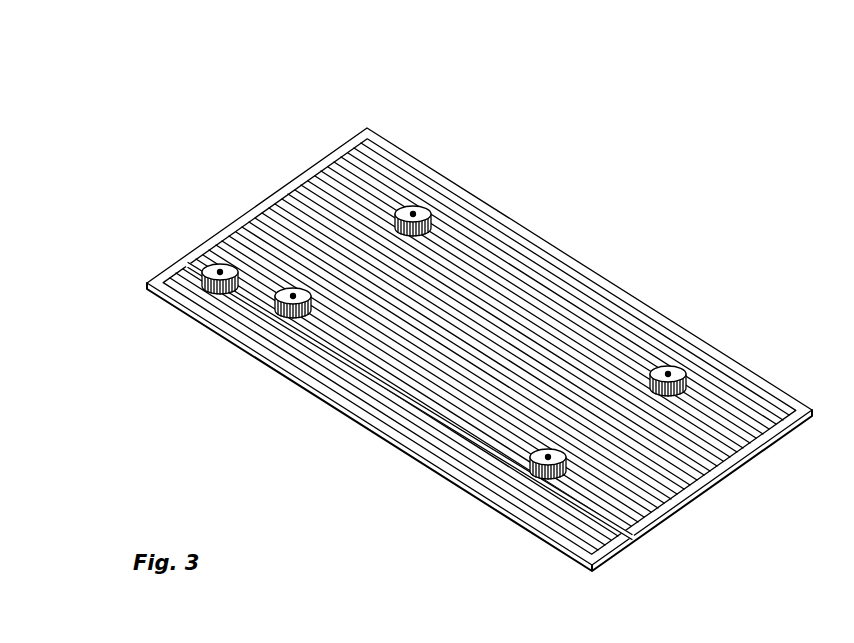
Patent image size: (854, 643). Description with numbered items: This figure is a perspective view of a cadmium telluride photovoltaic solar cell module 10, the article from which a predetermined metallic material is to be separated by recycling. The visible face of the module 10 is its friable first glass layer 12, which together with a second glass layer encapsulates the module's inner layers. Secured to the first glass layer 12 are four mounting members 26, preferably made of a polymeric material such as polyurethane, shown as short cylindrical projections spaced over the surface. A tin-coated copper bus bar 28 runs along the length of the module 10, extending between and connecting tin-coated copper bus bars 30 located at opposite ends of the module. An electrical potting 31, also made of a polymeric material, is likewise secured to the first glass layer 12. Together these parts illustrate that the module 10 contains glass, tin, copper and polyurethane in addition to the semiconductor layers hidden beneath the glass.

The solar cell module 10 is at (432, 331).
The first glass layer 12 is at (488, 213).
The mounting members 26 is at (403, 210).
The bus bar 28 is at (420, 405).
The bus bars 30 is at (252, 207).
The electrical potting 31 is at (205, 263).